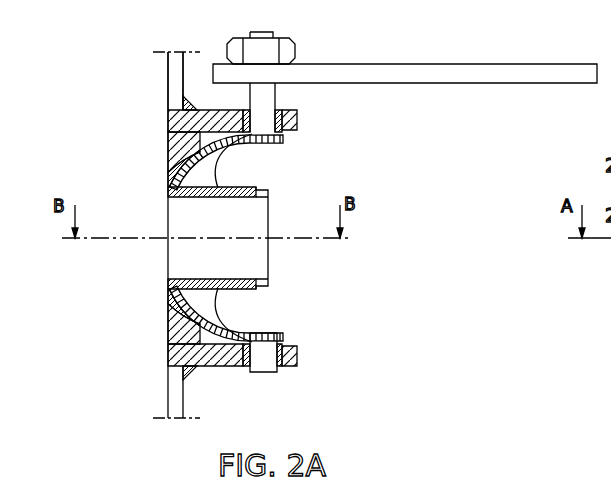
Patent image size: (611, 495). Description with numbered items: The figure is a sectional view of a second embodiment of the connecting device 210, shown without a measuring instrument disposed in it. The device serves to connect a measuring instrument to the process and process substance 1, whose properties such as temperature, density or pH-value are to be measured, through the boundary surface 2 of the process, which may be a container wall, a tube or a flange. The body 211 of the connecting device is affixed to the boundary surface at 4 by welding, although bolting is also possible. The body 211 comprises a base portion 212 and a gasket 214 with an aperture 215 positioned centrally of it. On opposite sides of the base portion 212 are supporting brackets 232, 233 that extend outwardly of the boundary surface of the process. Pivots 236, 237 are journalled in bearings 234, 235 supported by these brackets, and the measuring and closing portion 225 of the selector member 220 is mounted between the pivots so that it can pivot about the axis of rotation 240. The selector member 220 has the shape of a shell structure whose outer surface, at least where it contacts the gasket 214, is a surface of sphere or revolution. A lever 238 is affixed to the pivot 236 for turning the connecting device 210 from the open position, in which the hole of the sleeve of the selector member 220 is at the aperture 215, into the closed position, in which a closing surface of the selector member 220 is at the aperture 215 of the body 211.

The process and process substance 1 is at (136, 88).
The boundary surface 2 is at (170, 397).
The weld fixing point 4 is at (188, 372).
The connecting device 210 is at (297, 377).
The body 211 is at (198, 77).
The base portion 212 is at (187, 140).
The gasket 214 is at (170, 178).
The aperture 215 is at (168, 200).
The selector member 220 is at (293, 299).
The measuring and closing portion 225 is at (217, 162).
The supporting bracket 232 is at (297, 118).
The supporting bracket 233 is at (293, 349).
The bearing 234 is at (283, 134).
The bearing 235 is at (293, 358).
The pivot 236 is at (265, 94).
The pivot 237 is at (267, 350).
The lever 238 is at (418, 70).
The axis of rotation 240 is at (272, 38).